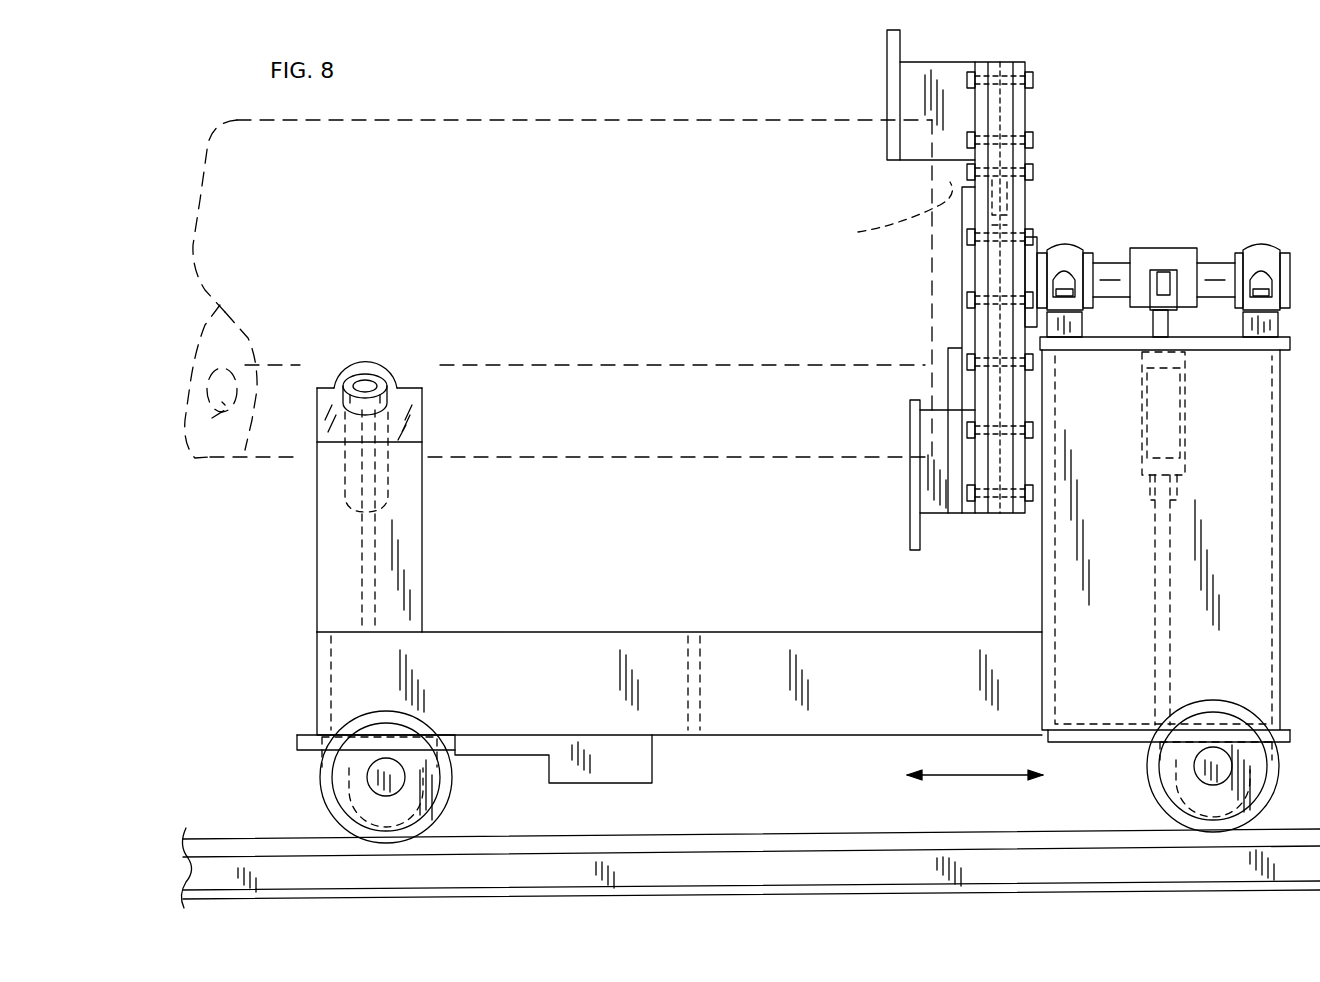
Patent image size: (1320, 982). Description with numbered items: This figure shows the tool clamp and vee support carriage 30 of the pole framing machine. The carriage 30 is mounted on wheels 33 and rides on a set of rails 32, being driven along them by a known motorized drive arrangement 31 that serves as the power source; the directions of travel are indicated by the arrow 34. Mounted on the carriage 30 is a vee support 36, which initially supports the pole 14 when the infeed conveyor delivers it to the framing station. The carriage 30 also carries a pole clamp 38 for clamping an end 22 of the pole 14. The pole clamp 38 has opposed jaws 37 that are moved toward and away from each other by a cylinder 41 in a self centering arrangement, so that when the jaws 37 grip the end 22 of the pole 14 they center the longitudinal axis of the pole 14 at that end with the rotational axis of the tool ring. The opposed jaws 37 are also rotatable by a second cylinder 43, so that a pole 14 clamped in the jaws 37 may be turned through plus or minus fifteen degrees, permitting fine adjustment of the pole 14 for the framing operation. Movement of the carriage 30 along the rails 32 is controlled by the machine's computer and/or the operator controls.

The pole 14 is at (622, 110).
The end of the pole 22 is at (888, 215).
The carriage 30 is at (1152, 93).
The motorized drive arrangement 31 is at (655, 745).
The rails 32 is at (765, 833).
The wheels 33 is at (455, 798).
The arrow 34 is at (975, 790).
The vee support 36 is at (400, 375).
The opposed jaws 37 is at (898, 160).
The pole clamp 38 is at (1030, 196).
The cylinder 41 is at (964, 298).
The cylinder 43 is at (1188, 386).